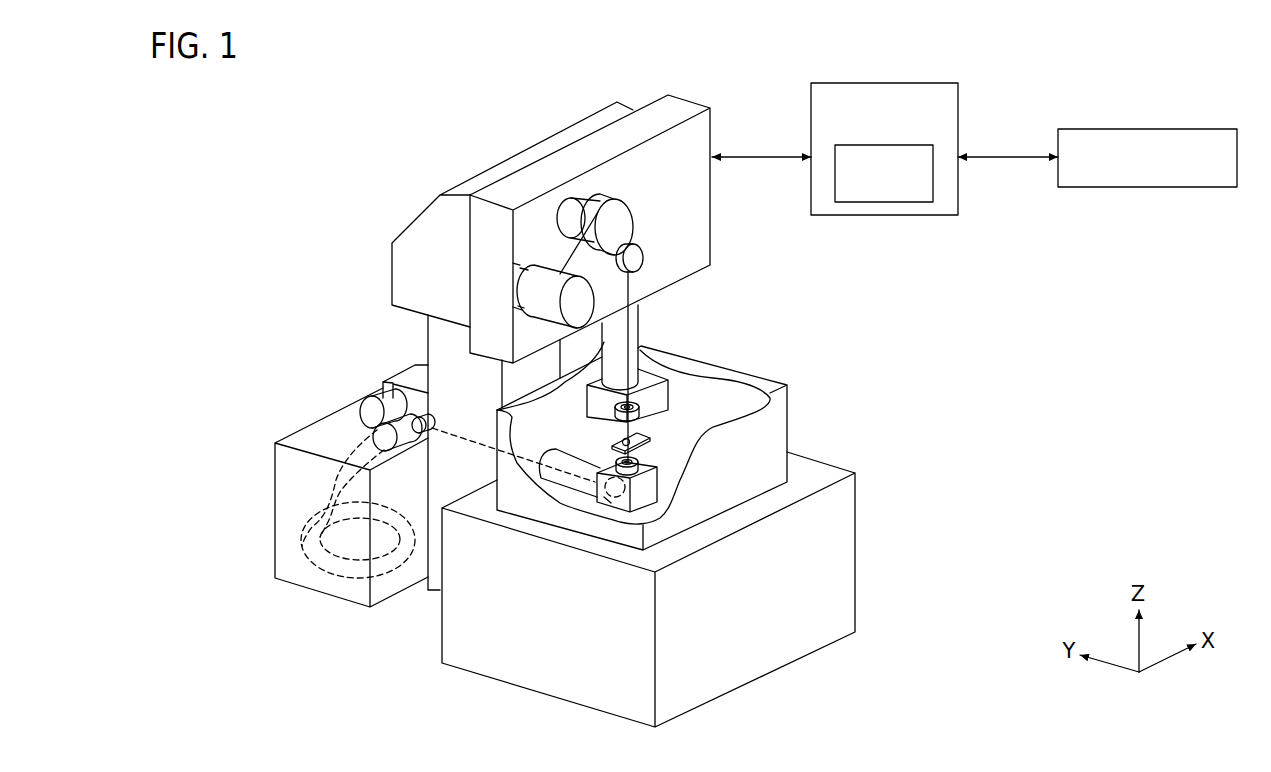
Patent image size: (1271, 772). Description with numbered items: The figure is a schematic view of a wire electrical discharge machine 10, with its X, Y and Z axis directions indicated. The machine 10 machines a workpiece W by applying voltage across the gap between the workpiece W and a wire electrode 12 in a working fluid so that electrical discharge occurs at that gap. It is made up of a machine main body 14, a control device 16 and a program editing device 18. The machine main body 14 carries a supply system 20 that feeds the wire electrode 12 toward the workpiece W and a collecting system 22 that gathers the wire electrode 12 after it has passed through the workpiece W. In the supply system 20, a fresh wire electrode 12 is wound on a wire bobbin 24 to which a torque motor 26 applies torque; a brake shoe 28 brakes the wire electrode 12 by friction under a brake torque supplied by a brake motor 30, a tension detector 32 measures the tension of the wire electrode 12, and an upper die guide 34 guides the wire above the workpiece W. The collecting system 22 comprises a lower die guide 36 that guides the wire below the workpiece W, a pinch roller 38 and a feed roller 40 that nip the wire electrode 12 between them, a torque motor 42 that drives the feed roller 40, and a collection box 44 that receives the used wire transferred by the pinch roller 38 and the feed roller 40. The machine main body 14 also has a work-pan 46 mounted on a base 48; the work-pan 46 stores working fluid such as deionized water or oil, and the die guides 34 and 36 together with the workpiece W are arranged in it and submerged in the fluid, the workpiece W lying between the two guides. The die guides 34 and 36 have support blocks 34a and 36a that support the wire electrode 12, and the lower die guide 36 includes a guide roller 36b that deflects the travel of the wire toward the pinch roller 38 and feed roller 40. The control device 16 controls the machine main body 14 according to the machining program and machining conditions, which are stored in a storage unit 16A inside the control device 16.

The wire electrical discharge machine 10 is at (270, 161).
The wire electrode 12 is at (632, 289).
The machine main body 14 is at (386, 224).
The control device 16 is at (889, 82).
The storage unit 16A is at (886, 203).
The program editing device 18 is at (1123, 128).
The supply system 20 is at (655, 208).
The collecting system 22 is at (318, 402).
The wire bobbin 24 is at (545, 280).
The torque motor 26 is at (517, 287).
The brake shoe 28 is at (617, 214).
The brake motor 30 is at (572, 215).
The tension detector 32 is at (640, 262).
The upper die guide 34 is at (650, 372).
The support block 34a is at (641, 410).
The lower die guide 36 is at (660, 487).
The support block 36a is at (639, 460).
The guide roller 36b is at (610, 503).
The pinch roller 38 is at (392, 388).
The feed roller 40 is at (402, 447).
The torque motor 42 is at (422, 422).
The collection box 44 is at (288, 489).
The work-pan 46 is at (768, 380).
The base 48 is at (783, 648).
The workpiece W is at (611, 446).